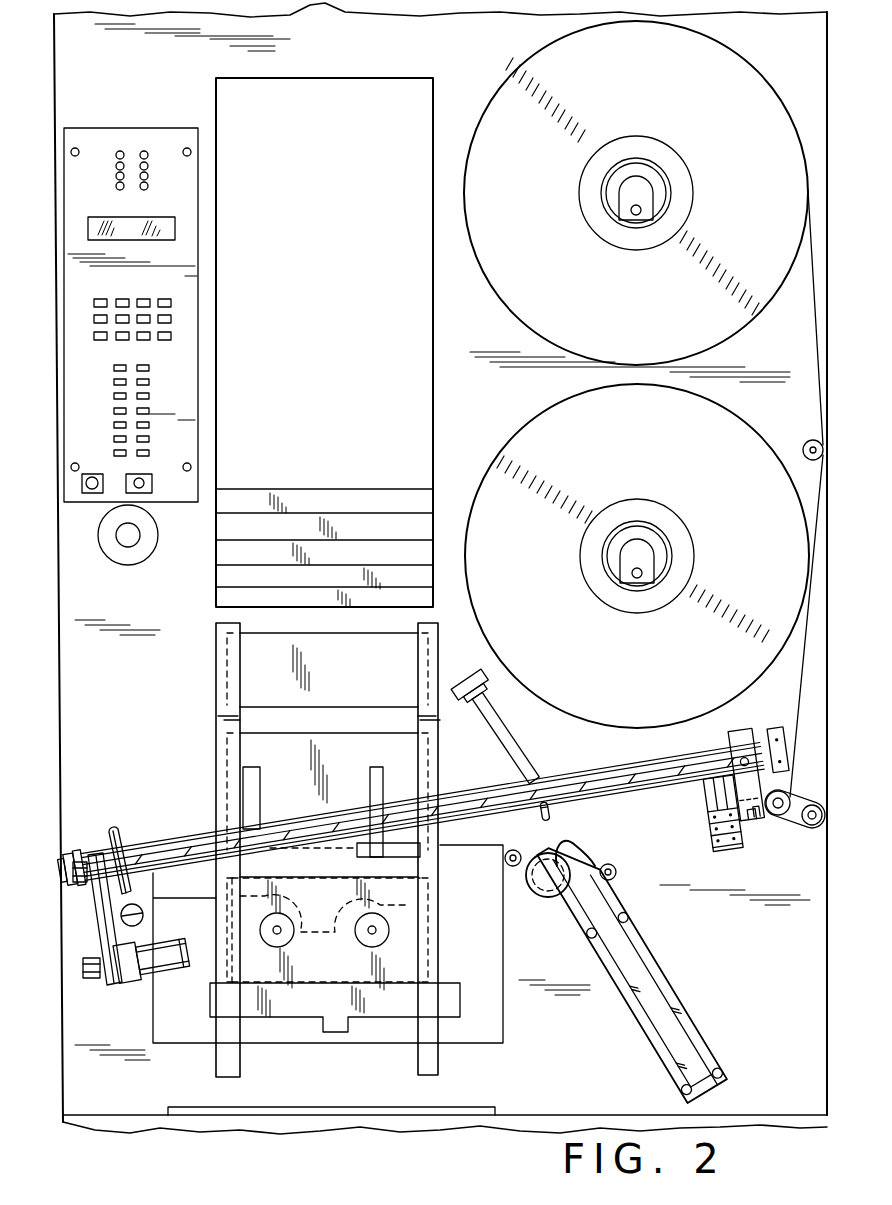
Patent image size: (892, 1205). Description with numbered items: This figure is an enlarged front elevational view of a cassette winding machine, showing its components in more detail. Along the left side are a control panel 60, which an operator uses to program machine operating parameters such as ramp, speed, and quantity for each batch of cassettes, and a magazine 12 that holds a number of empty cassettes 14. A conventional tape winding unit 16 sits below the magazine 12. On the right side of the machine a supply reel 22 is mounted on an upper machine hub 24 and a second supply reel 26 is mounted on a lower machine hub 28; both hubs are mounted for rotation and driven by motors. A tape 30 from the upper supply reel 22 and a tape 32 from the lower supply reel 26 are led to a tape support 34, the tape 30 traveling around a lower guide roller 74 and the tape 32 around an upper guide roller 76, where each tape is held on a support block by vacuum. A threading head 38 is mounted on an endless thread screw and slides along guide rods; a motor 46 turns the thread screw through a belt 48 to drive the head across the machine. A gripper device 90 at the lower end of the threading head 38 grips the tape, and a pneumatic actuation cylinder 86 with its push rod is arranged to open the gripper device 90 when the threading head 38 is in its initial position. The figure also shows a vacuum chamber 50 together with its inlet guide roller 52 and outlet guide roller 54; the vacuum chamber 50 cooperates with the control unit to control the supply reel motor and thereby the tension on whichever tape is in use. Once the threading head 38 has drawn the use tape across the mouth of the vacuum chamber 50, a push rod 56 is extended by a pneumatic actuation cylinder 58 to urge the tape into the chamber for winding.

The magazine 12 is at (433, 368).
The empty cassettes 14 is at (410, 500).
The tape winding unit 16 is at (212, 752).
The supply reel 22 is at (655, 88).
The upper machine hub 24 is at (657, 152).
The supply reel 26 is at (648, 435).
The lower machine hub 28 is at (650, 512).
The tape 30 is at (812, 342).
The tape 32 is at (798, 663).
The tape support 34 is at (734, 862).
The threading head 38 is at (728, 735).
The motor 46 is at (172, 970).
The belt 48 is at (80, 940).
The vacuum chamber 50 is at (692, 1028).
The inlet guide roller 52 is at (612, 864).
The outlet guide roller 54 is at (535, 892).
The push rod 56 is at (550, 813).
The pneumatic actuation cylinder 58 is at (512, 738).
The control panel 60 is at (130, 128).
The lower guide roller 74 is at (811, 826).
The upper guide roller 76 is at (781, 816).
The pneumatic actuation cylinder 86 is at (114, 826).
The gripper device 90 is at (757, 824).